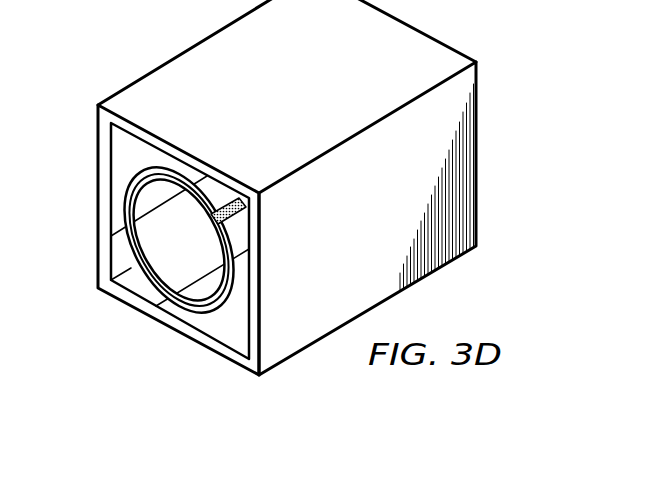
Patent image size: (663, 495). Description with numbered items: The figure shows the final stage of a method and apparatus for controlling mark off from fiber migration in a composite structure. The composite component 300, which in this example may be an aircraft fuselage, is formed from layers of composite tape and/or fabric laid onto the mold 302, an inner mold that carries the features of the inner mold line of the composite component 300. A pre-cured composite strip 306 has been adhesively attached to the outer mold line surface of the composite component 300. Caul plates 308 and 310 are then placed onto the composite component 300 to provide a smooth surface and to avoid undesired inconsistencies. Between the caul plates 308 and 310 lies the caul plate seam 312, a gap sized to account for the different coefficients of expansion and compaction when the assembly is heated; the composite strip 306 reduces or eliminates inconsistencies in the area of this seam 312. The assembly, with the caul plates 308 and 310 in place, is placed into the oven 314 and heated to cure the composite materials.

The composite component 300 is at (173, 168).
The mold 302 is at (125, 246).
The composite strip 306 is at (260, 199).
The caul plate 308 is at (182, 175).
The caul plate 310 is at (237, 292).
The caul plate seam 312 is at (226, 205).
The oven 314 is at (183, 53).